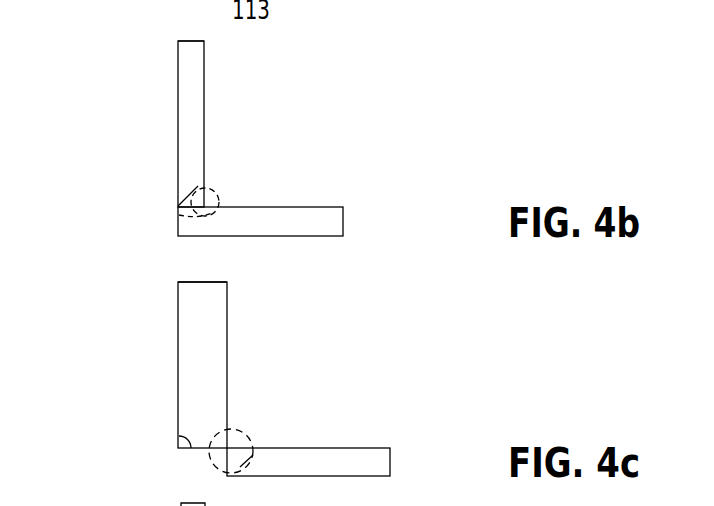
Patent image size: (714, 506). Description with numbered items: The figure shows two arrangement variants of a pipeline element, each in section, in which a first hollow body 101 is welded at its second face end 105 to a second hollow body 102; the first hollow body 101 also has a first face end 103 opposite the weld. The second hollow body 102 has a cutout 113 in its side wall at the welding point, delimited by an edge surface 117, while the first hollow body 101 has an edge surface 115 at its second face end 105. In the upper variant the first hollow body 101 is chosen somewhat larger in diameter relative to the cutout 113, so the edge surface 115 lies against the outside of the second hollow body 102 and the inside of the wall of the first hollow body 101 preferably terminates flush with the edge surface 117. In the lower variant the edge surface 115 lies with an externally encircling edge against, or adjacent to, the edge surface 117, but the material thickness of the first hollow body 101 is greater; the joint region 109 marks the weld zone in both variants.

In FIG. 4b, the first hollow body 101 is at (178, 107).
In FIG. 4c, the first hollow body 101 is at (227, 345).
In FIG. 4b, the second hollow body 102 is at (333, 207).
In FIG. 4c, the second hollow body 102 is at (379, 448).
In FIG. 4b, the first face end 103 is at (192, 40).
In FIG. 4c, the first face end 103 is at (204, 280).
In FIG. 4c, the second face end 105 is at (208, 428).
In FIG. 4b, the joint region 109 is at (225, 185).
In FIG. 4c, the joint region 109 is at (248, 428).
In FIG. 4b, the cutout 113 is at (155, 198).
In FIG. 4c, the cutout 113 is at (157, 440).
In FIG. 4b, the edge surface 115 is at (178, 196).
In FIG. 4c, the edge surface 115 is at (179, 437).
In FIG. 4b, the edge surface 117 is at (179, 219).
In FIG. 4c, the edge surface 117 is at (240, 467).